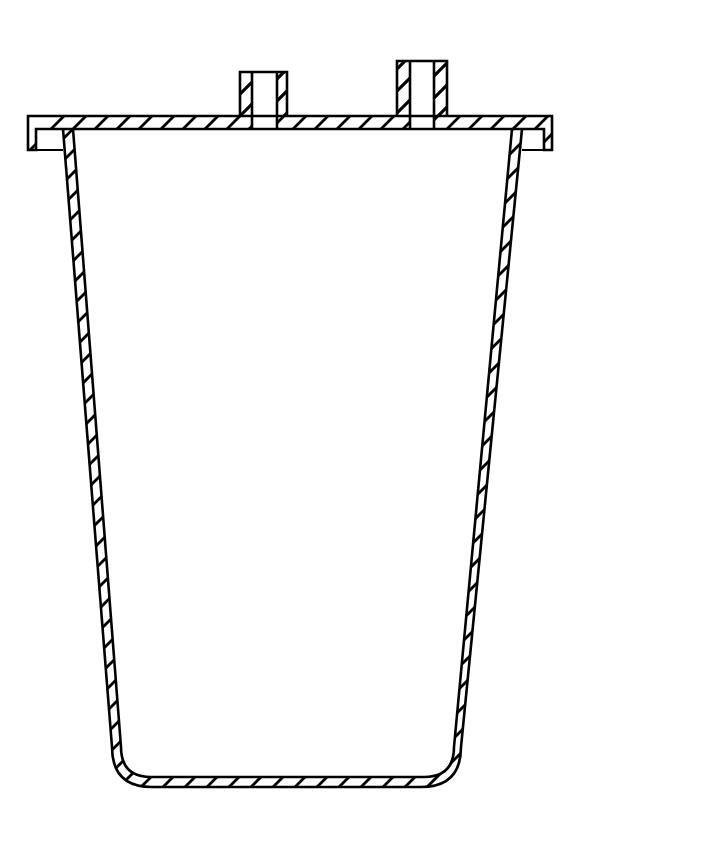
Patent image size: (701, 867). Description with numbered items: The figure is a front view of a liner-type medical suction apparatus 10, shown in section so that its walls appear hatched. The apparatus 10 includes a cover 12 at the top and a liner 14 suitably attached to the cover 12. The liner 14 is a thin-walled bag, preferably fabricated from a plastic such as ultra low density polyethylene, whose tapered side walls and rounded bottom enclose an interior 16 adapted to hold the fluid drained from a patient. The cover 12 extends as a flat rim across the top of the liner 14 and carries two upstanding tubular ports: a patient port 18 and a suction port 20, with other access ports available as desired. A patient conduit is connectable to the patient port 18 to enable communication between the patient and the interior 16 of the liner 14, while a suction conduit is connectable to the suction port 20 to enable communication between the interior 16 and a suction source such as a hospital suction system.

The liner-type medical suction apparatus 10 is at (588, 87).
The cover 12 is at (113, 118).
The liner 14 is at (473, 481).
The interior 16 is at (450, 290).
The patient port 18 is at (447, 74).
The suction port 20 is at (240, 78).